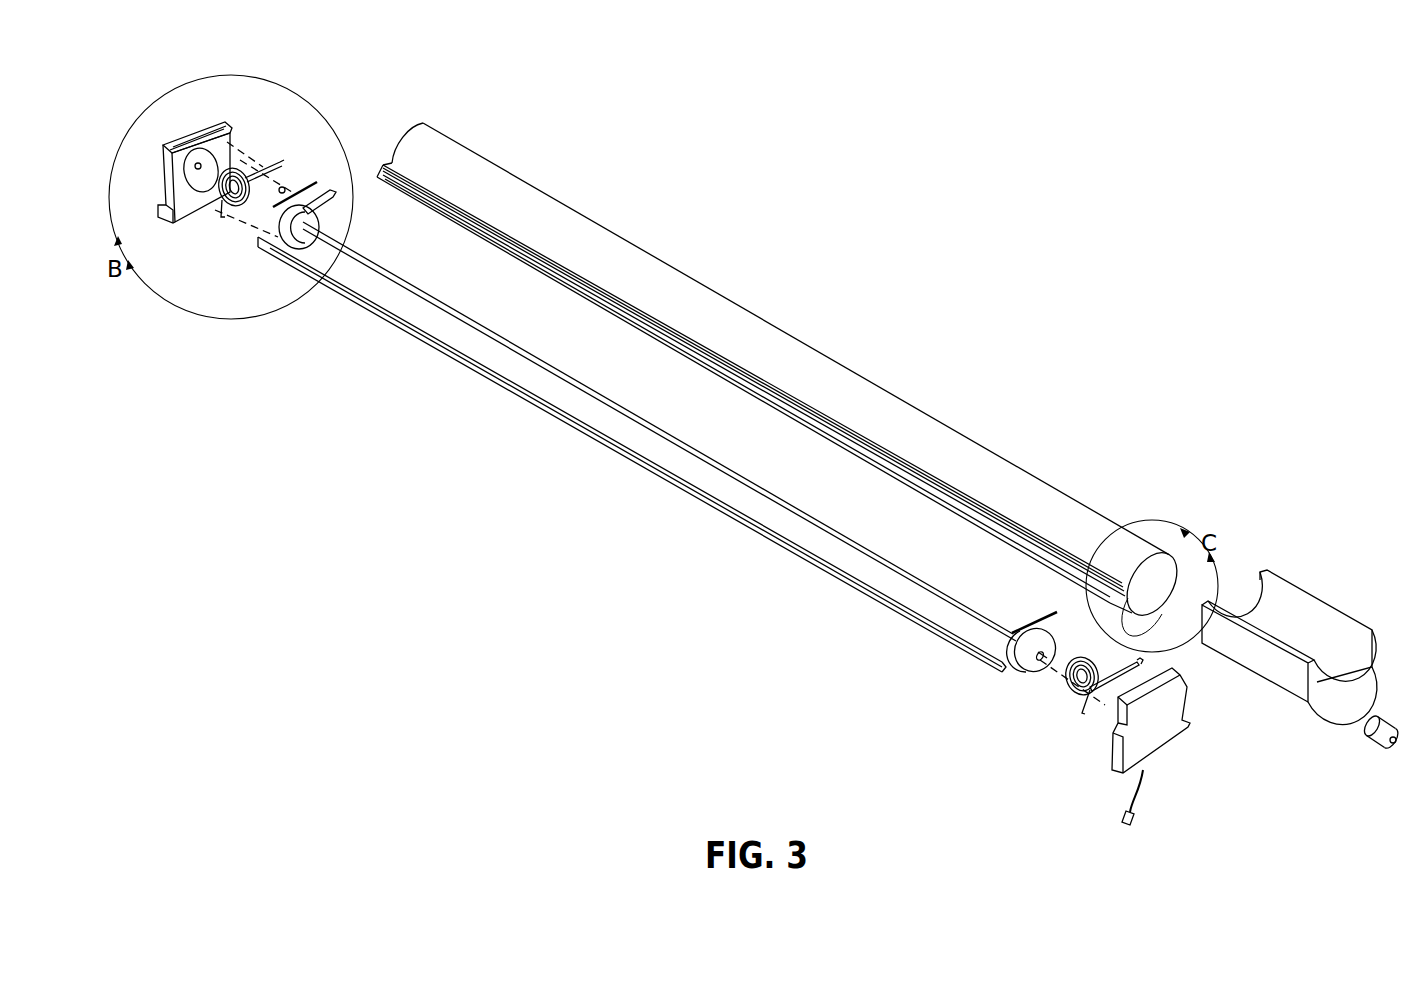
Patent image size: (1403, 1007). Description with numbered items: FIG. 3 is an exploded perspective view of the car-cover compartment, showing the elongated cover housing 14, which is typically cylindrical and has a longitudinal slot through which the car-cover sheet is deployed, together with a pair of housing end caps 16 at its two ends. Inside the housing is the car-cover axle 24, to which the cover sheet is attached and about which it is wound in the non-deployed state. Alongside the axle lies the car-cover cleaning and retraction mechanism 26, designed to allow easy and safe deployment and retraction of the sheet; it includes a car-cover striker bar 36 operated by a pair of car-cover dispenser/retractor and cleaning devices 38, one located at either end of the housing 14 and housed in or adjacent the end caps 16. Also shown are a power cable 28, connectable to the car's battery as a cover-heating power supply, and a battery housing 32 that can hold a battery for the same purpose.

The cover housing 14 is at (808, 351).
The housing end caps 16 is at (215, 120).
The car-cover axle 24 is at (482, 337).
The car-cover cleaning and retraction mechanism 26 is at (986, 705).
The power cable 28 is at (1140, 798).
The battery housing 32 is at (1375, 733).
The car-cover striker bar 36 is at (600, 433).
The car-cover dispenser/retractor and cleaning devices 38 is at (207, 239).